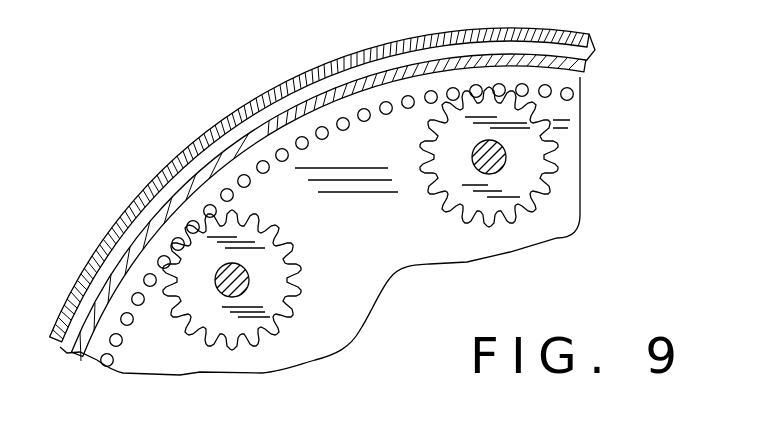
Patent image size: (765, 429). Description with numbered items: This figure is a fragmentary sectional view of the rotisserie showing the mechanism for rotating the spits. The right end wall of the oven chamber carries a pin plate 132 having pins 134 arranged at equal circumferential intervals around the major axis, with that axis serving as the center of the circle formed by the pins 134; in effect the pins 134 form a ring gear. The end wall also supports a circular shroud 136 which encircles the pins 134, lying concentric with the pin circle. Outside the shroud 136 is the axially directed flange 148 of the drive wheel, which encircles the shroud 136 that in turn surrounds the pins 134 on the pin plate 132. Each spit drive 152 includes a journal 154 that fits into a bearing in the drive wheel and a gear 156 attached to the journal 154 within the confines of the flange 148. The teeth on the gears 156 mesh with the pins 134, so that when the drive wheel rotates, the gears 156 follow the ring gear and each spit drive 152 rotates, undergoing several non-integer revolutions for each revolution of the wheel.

The pin plate 132 is at (450, 245).
The pins 134 is at (323, 133).
The circular shroud 136 is at (473, 77).
The axially directed flange 148 is at (213, 133).
The spit drive 152 is at (230, 322).
The journal 154 is at (240, 282).
The gear 156 is at (273, 292).